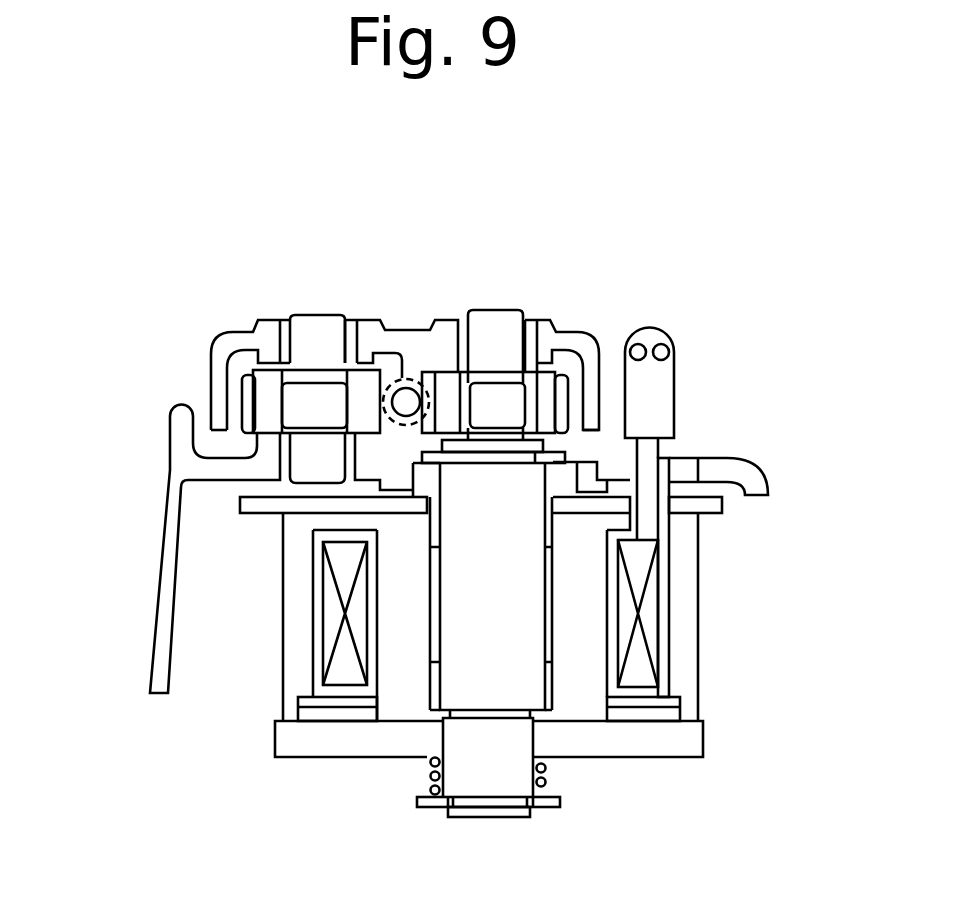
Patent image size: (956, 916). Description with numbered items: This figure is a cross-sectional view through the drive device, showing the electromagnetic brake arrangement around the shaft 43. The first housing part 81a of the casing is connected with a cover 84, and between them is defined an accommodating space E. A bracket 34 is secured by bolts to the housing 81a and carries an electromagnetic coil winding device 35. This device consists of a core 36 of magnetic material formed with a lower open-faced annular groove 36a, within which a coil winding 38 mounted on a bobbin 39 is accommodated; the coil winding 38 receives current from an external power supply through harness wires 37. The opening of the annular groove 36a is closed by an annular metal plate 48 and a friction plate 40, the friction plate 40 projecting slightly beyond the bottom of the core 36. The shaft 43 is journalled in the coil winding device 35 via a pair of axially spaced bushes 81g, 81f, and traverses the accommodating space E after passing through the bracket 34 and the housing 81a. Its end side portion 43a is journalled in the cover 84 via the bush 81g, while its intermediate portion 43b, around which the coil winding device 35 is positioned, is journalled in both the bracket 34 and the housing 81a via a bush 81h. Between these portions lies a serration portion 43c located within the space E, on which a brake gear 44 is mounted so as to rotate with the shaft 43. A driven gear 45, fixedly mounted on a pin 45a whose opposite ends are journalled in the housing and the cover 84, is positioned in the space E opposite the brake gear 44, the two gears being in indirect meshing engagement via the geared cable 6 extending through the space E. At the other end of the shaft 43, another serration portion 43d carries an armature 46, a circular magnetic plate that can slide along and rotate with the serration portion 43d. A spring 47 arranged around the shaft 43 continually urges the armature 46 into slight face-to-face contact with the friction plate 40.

The geared cable 6 is at (403, 388).
The accommodating space E is at (384, 360).
The bracket 34 is at (253, 505).
The electromagnetic coil winding device 35 is at (713, 643).
The core 36 is at (214, 685).
The annular groove 36a is at (326, 604).
The harness wires 37 is at (662, 410).
The coil winding 38 is at (653, 607).
The bobbin 39 is at (667, 677).
The friction plate 40 is at (323, 717).
The shaft 43 is at (624, 535).
The end side portion of shaft 43a is at (508, 335).
The intermediate portion of shaft 43b is at (523, 602).
The serration portion 43c is at (483, 400).
The serration portion 43d is at (480, 783).
The brake gear 44 is at (548, 393).
The driven gear 45 is at (265, 398).
The pin 45a is at (310, 330).
The armature 46 is at (673, 748).
The spring 47 is at (540, 787).
The annular metal plate 48 is at (638, 703).
The first housing part 81a is at (168, 495).
The bush 81f is at (430, 690).
The bush 81g is at (533, 345).
The bush 81h is at (567, 480).
The cover 84 is at (417, 343).